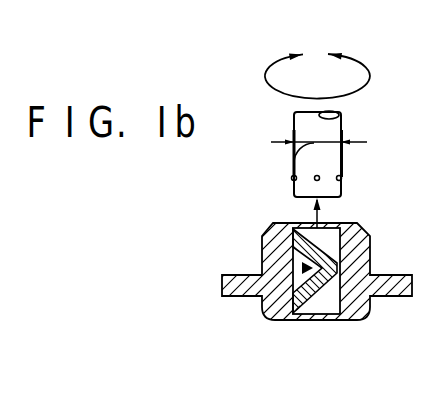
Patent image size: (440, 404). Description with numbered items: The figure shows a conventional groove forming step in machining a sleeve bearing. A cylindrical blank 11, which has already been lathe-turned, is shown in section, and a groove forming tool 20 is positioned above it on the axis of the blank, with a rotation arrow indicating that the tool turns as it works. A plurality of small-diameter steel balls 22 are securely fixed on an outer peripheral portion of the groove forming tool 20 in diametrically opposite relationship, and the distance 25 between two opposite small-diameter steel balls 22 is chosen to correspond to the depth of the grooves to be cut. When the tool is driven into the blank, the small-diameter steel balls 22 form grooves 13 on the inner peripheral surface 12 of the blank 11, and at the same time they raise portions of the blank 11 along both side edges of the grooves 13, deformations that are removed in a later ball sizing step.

The cylindrical blank 11 is at (366, 248).
The inner peripheral surface 12 is at (336, 286).
The grooves 13 is at (318, 303).
The groove forming tool 20 is at (333, 128).
The small-diameter steel balls 22 is at (317, 180).
The distance 25 is at (294, 163).